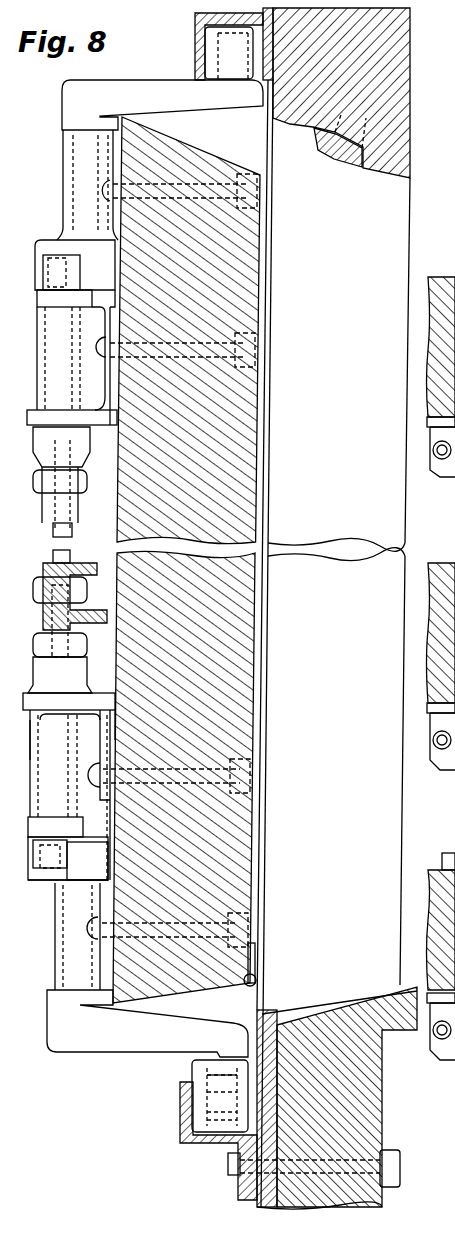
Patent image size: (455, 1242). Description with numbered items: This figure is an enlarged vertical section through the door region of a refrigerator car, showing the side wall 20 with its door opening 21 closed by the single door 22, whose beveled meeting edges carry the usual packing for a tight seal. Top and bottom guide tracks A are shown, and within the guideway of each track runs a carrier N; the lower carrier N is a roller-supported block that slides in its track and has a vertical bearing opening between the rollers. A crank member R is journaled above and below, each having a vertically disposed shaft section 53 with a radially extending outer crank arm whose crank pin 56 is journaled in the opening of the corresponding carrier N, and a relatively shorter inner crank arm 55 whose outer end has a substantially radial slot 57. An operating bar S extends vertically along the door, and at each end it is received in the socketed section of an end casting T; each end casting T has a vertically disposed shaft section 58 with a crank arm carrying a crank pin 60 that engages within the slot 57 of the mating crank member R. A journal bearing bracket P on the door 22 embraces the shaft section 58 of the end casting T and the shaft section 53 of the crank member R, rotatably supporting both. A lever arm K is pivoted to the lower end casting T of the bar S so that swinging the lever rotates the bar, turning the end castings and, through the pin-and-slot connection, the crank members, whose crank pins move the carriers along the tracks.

The side wall 20 is at (407, 86).
The door opening 21 is at (273, 160).
The door 22 is at (168, 139).
The guide track A is at (195, 37).
The carrier N is at (241, 75).
The crank member R is at (160, 84).
The journal bearing bracket P is at (42, 333).
The end casting T is at (36, 450).
The operating bar S is at (52, 531).
The lever arm K is at (43, 613).
The shaft section 58 is at (38, 750).
The crank pin 60 is at (33, 850).
The slot 57 is at (36, 862).
The crank arm 55 is at (46, 880).
The shaft section 53 is at (62, 914).
The crank pin 56 is at (205, 1078).